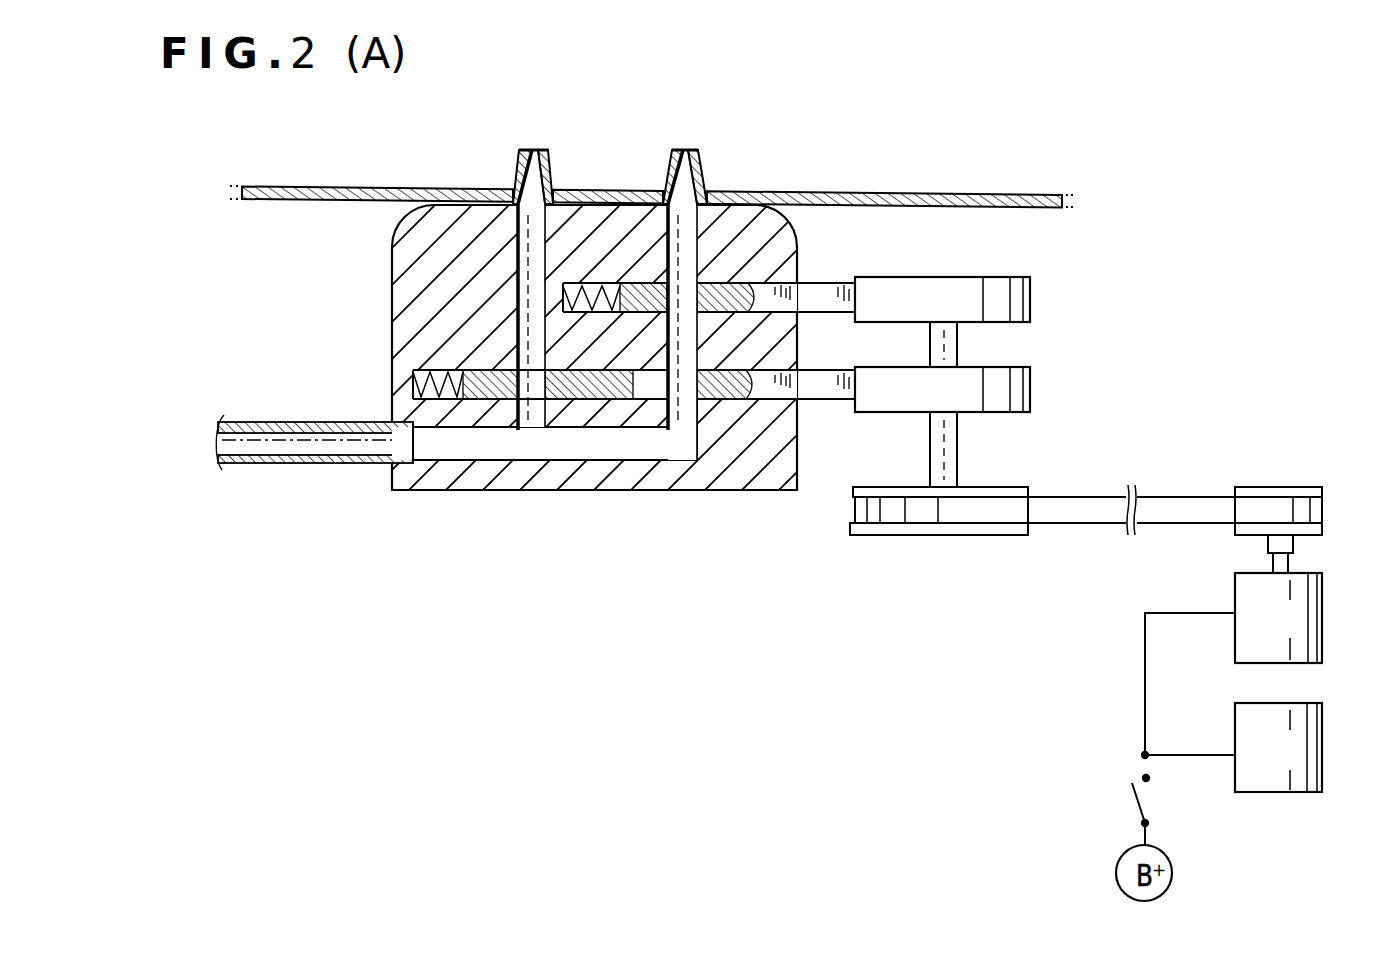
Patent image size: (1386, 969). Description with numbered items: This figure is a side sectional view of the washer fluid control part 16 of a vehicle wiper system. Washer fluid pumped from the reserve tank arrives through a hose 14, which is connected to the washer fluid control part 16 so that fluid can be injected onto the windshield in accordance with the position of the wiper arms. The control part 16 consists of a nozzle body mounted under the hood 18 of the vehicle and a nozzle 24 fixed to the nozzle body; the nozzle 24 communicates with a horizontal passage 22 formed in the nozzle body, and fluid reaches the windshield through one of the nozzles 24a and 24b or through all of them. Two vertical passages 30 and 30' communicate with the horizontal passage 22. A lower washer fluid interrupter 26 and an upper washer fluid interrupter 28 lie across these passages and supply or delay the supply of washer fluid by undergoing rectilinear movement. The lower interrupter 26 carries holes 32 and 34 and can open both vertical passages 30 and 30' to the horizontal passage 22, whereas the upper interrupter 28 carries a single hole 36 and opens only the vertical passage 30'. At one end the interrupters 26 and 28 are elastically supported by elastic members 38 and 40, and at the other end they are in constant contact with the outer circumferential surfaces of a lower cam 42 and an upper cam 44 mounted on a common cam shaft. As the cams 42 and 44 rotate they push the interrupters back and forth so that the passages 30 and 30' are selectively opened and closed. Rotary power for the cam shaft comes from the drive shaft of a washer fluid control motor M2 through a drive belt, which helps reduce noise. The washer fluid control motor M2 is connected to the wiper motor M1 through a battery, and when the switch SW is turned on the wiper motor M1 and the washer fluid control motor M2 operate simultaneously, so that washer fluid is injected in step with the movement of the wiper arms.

The hose 14 is at (306, 466).
The washer fluid control part 16 is at (404, 141).
The hood 18 is at (806, 192).
The horizontal passage 22 is at (440, 452).
The nozzle 24 is at (630, 78).
The nozzle 24a is at (549, 150).
The nozzle 24b is at (671, 150).
The lower washer fluid interrupter 26 is at (833, 401).
The upper washer fluid interrupter 28 is at (836, 288).
The vertical passage 30 is at (501, 286).
The vertical passage 30' is at (697, 346).
The hole 32 is at (529, 390).
The hole 34 is at (681, 397).
The hole 36 is at (694, 294).
The elastic member 38 is at (413, 371).
The elastic member 40 is at (596, 283).
The lower cam 42 is at (1035, 395).
The upper cam 44 is at (1035, 286).
The wiper motor M1 is at (1278, 747).
The washer fluid control motor M2 is at (1278, 618).
The switch SW is at (1110, 786).